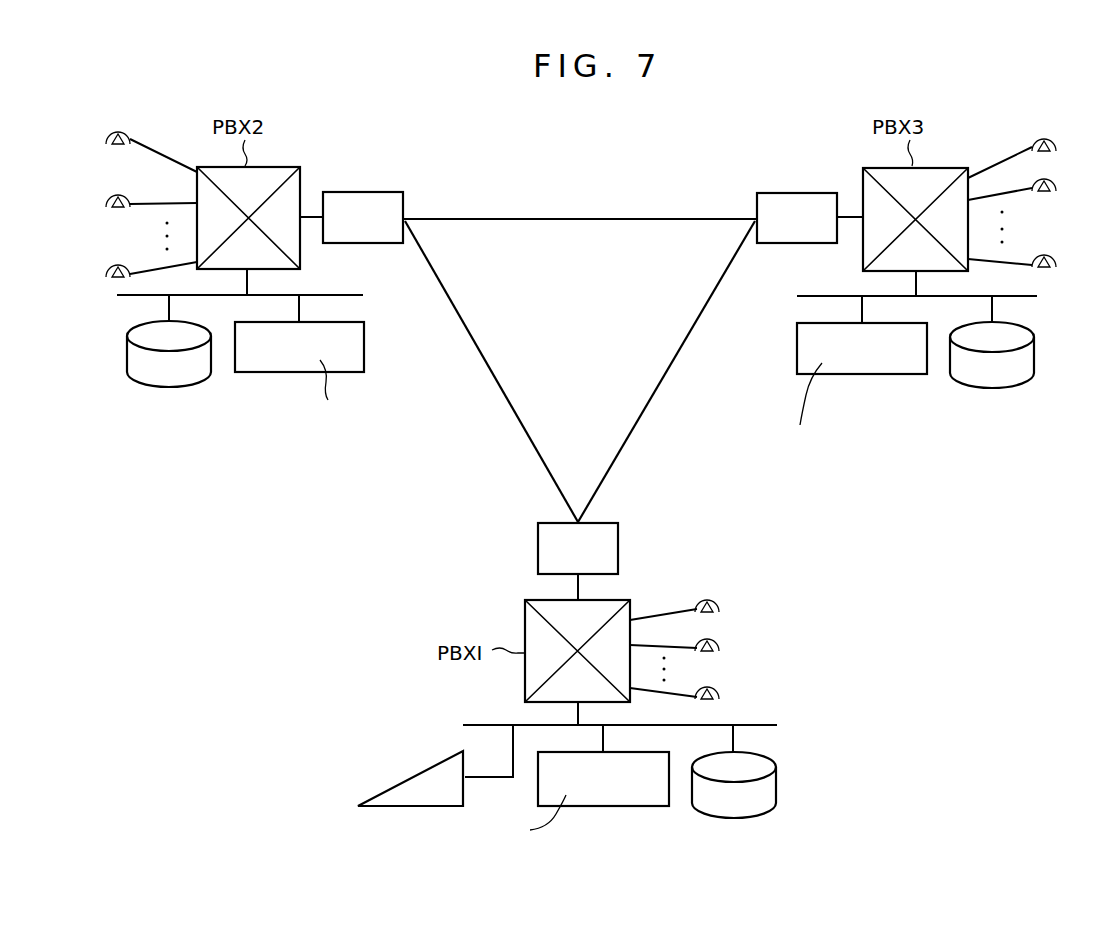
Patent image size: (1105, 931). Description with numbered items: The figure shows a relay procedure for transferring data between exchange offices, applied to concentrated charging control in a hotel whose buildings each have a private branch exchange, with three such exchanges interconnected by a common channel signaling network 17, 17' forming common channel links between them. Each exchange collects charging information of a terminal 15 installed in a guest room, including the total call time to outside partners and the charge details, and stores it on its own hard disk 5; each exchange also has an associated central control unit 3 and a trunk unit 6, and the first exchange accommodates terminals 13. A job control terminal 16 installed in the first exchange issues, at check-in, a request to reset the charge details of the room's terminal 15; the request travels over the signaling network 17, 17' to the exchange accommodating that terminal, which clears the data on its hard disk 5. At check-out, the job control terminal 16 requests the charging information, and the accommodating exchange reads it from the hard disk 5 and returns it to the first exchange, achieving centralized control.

The central control unit 3 is at (297, 372).
The hard disk 5 is at (168, 387).
The trunk interface unit 6 is at (362, 192).
The telephone terminals of PBX1 13 is at (709, 598).
The terminal 15 is at (118, 124).
The job control terminal 16 is at (410, 773).
The common channel signaling network 17 is at (491, 371).
The common channel signaling link 17' is at (666, 371).